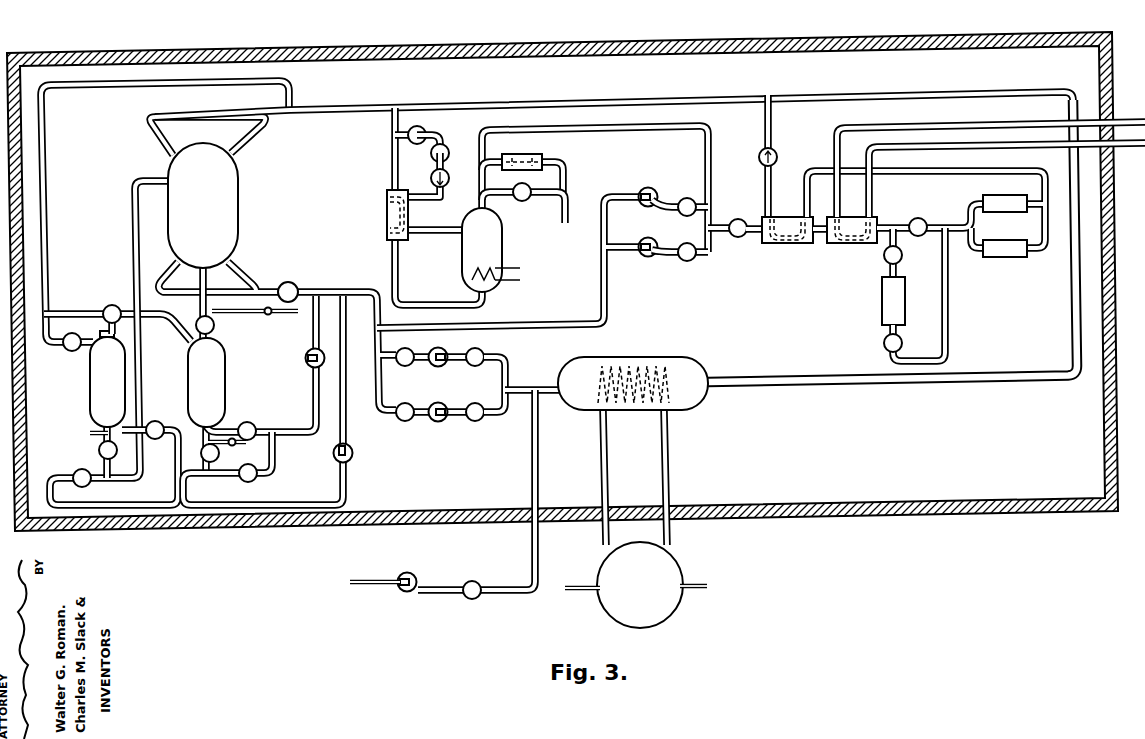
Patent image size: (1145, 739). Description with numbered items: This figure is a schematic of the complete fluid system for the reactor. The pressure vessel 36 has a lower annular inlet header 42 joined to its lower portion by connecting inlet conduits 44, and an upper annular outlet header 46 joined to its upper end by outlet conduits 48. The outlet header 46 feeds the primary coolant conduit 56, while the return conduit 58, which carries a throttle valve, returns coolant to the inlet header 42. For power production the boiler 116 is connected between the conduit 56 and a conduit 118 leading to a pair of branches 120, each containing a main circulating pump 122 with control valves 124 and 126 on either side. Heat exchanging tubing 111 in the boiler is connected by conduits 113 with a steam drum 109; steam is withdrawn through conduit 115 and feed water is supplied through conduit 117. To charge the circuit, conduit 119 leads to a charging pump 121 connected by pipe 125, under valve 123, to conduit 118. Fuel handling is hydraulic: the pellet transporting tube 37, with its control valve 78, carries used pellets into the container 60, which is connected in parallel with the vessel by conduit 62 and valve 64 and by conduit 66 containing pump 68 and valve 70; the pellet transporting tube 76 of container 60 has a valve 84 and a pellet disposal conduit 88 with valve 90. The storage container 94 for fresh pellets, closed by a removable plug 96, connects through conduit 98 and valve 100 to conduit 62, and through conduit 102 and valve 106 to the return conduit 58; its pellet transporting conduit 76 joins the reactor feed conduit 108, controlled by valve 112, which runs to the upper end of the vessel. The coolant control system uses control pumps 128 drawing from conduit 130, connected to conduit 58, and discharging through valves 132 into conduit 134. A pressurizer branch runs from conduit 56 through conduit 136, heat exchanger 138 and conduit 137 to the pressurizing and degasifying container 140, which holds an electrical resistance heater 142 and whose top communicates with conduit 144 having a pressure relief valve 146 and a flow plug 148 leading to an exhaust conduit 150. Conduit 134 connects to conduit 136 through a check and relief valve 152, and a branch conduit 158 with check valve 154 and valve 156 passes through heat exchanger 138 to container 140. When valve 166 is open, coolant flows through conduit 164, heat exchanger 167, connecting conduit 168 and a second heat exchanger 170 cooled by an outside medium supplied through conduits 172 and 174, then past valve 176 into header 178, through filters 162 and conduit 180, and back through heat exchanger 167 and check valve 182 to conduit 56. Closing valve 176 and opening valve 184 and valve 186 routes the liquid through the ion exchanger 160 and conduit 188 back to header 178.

The pressure vessel 36 is at (232, 196).
The pellet transporting tube 37 is at (208, 284).
The lower annular inlet header 42 is at (255, 319).
The connecting inlet conduits 44 is at (168, 262).
The upper annular outlet header 46 is at (187, 110).
The outlet conduits 48 is at (155, 136).
The primary coolant conduit 56 is at (335, 106).
The return conduit 58 is at (352, 288).
The container for used fuel pellets 60 is at (226, 372).
The conduit 62 is at (183, 327).
The valve 64 is at (113, 305).
The conduit 66 is at (312, 320).
The pump 68 is at (305, 358).
The valve 70 is at (247, 421).
The pellet transporting tube 76 is at (98, 432).
The control valve 78 is at (198, 316).
The valve 84 is at (99, 450).
The pellet disposal conduit 88 is at (230, 476).
The valve 90 is at (256, 478).
The storage container for fresh fuel pellets 94 is at (92, 386).
The removable plug 96 is at (103, 313).
The conduit 98 is at (62, 343).
The valve 100 is at (72, 354).
The conduit 102 is at (158, 467).
The valve 106 is at (156, 421).
The reactor feed conduit 108 is at (131, 223).
The steam drum 109 is at (684, 572).
The heat exchanging tubing 111 is at (632, 362).
The valve 112 is at (73, 474).
The conduits 113 is at (660, 450).
The conduit 115 is at (580, 590).
The boiler 116 is at (700, 402).
The conduit 117 is at (700, 590).
The conduit 118 is at (545, 384).
The conduit 119 is at (370, 585).
The branches 120 is at (494, 356).
The charging pump 121 is at (408, 594).
The main circulating pump 122 is at (440, 396).
The valve 123 is at (472, 600).
The control valve 124 is at (475, 395).
The pipe 125 is at (534, 547).
The control valve 126 is at (400, 391).
The control pumps 128 is at (648, 189).
The conduit 130 is at (572, 320).
The valve 132 is at (687, 198).
The conduit 134 is at (716, 212).
The conduit 136 is at (392, 151).
The conduit 137 is at (400, 292).
The heat exchanger 138 is at (386, 207).
The pressurizer 140 is at (500, 246).
The electrical resistance heater 142 is at (502, 268).
The conduit 144 is at (449, 186).
The pressure relief valve 146 is at (530, 187).
The flow plug 148 is at (522, 152).
The conduit 150 is at (572, 206).
The check and relief valve 152 is at (424, 128).
The check valve 154 is at (392, 168).
The valve 156 is at (449, 153).
The branch conduit 158 is at (435, 216).
The ion exchanger 160 is at (882, 296).
The filters 162 is at (1005, 218).
The conduit 164 is at (754, 240).
The valve 166 is at (727, 240).
The heat exchanger 167 is at (800, 245).
The connecting conduit 168 is at (818, 244).
The second heat exchanger 170 is at (852, 238).
The conduit 172 is at (1126, 148).
The conduit 174 is at (1122, 118).
The valve 176 is at (922, 218).
The header 178 is at (962, 210).
The conduit 180 is at (1040, 180).
The check valve 182 is at (765, 156).
The valve 184 is at (902, 258).
The valve 186 is at (884, 343).
The conduit 188 is at (949, 343).